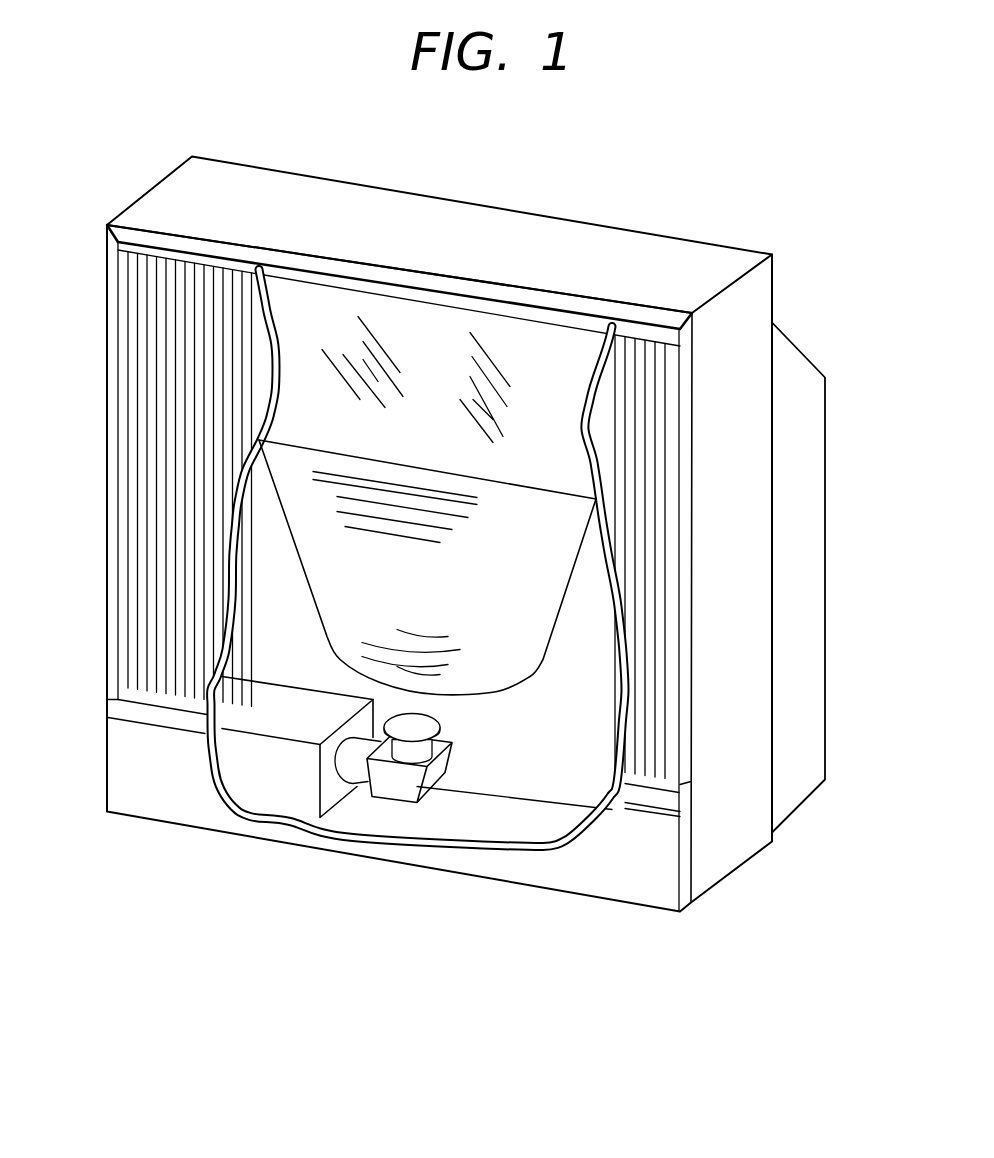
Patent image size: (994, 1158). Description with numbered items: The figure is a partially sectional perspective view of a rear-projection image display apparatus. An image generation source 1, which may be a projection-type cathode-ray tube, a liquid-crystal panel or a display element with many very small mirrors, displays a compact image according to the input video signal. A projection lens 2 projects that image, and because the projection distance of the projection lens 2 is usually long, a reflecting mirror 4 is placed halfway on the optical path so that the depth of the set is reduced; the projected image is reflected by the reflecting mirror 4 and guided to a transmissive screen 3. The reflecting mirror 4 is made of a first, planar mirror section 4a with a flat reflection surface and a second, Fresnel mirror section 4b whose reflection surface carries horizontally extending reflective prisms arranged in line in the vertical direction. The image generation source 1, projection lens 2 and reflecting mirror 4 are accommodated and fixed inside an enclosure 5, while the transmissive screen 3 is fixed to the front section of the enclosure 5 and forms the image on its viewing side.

The image generation source 1 is at (267, 787).
The projection lens 2 is at (390, 785).
The transmissive screen 3 is at (153, 390).
The reflecting mirror 4 is at (517, 347).
The planar mirror section 4a is at (555, 448).
The Fresnel mirror section 4b is at (517, 626).
The enclosure 5 is at (758, 288).